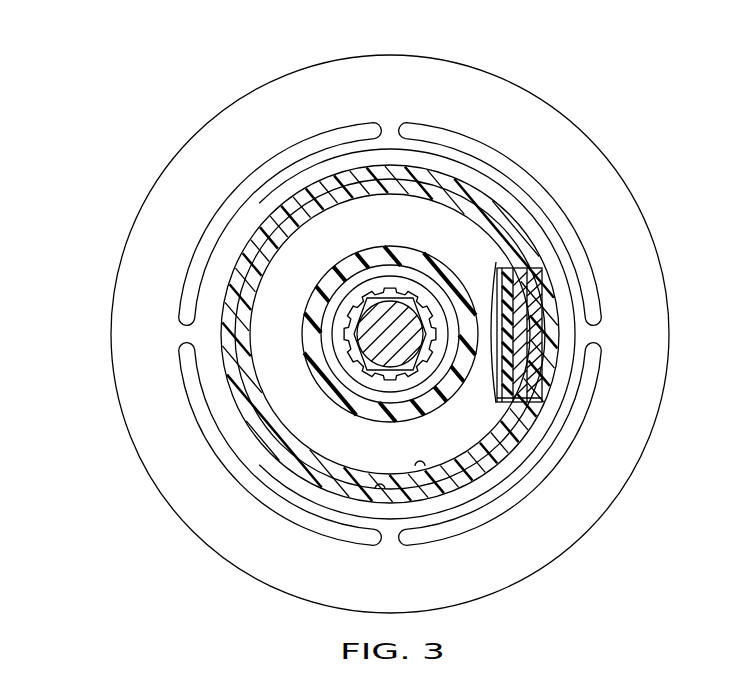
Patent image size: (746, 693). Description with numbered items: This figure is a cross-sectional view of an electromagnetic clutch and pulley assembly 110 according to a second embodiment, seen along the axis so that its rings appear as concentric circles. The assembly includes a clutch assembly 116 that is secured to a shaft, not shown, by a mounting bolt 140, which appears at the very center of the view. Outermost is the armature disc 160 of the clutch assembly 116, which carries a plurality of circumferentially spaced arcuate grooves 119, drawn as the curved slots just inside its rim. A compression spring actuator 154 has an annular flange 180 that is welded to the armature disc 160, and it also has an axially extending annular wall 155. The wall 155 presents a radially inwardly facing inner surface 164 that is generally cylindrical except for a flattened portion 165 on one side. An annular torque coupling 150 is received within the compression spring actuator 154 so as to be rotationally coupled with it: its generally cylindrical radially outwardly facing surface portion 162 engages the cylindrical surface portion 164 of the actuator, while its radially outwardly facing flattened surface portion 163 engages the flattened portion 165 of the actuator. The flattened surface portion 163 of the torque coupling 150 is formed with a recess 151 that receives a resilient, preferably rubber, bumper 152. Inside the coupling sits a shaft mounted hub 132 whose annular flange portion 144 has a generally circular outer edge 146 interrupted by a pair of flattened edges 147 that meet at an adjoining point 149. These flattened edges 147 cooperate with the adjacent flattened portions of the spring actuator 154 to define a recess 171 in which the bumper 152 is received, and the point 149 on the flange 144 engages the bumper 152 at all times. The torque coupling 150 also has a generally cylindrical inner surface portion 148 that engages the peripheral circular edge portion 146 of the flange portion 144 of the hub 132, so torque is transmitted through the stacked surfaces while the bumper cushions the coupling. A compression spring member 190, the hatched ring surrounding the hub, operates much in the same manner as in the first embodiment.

The electromagnetic clutch and pulley assembly 110 is at (85, 70).
The clutch assembly 116 is at (176, 137).
The arcuate grooves 119 is at (577, 248).
The shaft mounted hub 132 is at (253, 319).
The mounting bolt 140 is at (373, 318).
The annular flange portion 144 is at (297, 412).
The circular outer edge 146 is at (262, 497).
The flattened edges 147 is at (534, 268).
The cylindrical inner surface portion 148 is at (479, 471).
The adjoining point 149 is at (541, 323).
The annular torque coupling 150 is at (522, 440).
The recess 151 is at (548, 349).
The bumper 152 is at (490, 382).
The compression spring actuator 154 is at (428, 173).
The annular wall 155 is at (480, 198).
The armature disc 160 is at (640, 250).
The cylindrical surface portion 162 is at (327, 490).
The flattened surface portion 163 is at (534, 285).
The inner surface 164 is at (382, 494).
The flattened portion 165 is at (544, 397).
The recess 171 is at (492, 266).
The annular flange 180 is at (385, 150).
The compression spring member 190 is at (343, 270).